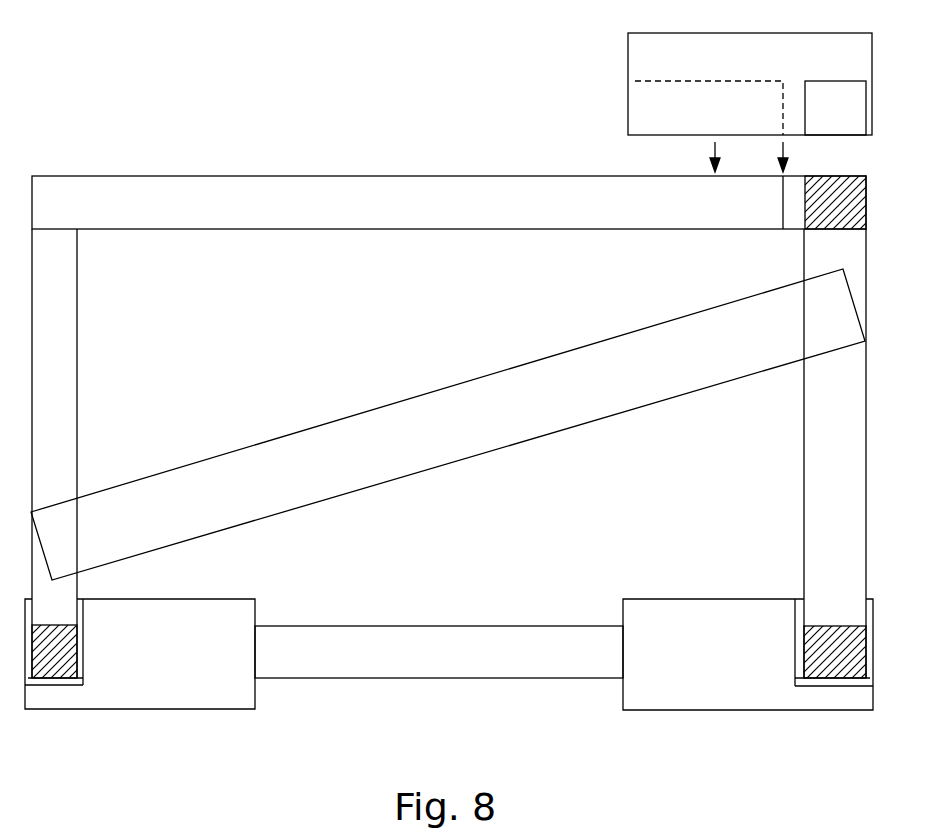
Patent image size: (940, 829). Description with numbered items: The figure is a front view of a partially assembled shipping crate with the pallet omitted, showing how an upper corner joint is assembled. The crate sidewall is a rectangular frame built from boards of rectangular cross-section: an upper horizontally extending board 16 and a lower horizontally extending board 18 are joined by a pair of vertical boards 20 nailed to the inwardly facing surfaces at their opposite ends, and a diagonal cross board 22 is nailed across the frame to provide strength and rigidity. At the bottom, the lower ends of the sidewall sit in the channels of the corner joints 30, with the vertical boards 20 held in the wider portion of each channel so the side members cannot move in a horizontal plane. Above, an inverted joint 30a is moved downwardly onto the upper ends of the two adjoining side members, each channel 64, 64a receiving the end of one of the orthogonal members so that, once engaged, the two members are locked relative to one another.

The upper horizontally extending board 16 is at (245, 229).
The lower horizontally extending board 18 is at (487, 626).
The vertical boards 20 is at (77, 412).
The diagonal cross board 22 is at (557, 434).
The corner joints 30 is at (163, 709).
The inverted joint 30a is at (674, 102).
The open end of channel 64 is at (850, 127).
The channel of inverted joint 64a is at (646, 105).